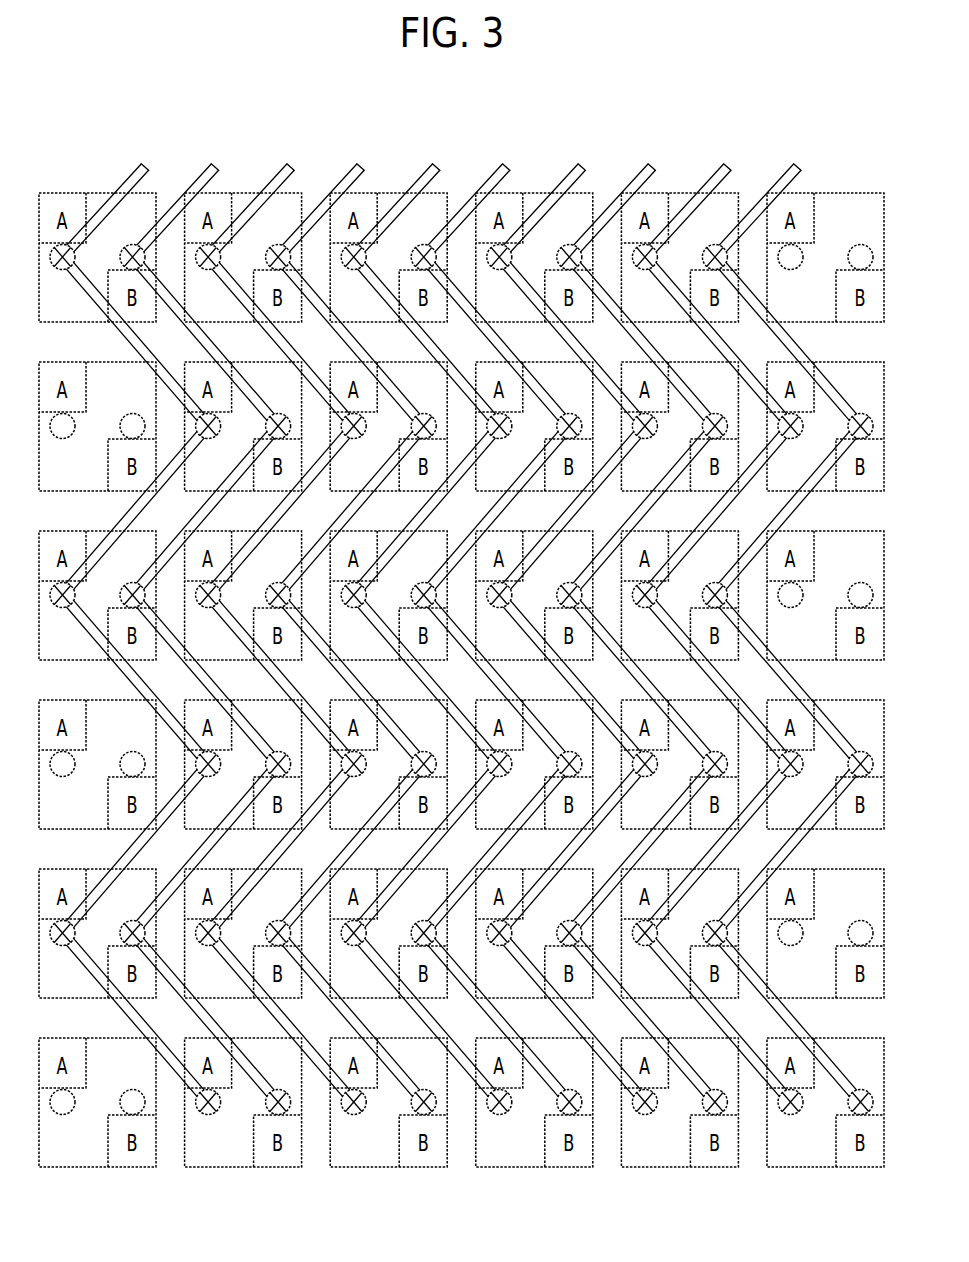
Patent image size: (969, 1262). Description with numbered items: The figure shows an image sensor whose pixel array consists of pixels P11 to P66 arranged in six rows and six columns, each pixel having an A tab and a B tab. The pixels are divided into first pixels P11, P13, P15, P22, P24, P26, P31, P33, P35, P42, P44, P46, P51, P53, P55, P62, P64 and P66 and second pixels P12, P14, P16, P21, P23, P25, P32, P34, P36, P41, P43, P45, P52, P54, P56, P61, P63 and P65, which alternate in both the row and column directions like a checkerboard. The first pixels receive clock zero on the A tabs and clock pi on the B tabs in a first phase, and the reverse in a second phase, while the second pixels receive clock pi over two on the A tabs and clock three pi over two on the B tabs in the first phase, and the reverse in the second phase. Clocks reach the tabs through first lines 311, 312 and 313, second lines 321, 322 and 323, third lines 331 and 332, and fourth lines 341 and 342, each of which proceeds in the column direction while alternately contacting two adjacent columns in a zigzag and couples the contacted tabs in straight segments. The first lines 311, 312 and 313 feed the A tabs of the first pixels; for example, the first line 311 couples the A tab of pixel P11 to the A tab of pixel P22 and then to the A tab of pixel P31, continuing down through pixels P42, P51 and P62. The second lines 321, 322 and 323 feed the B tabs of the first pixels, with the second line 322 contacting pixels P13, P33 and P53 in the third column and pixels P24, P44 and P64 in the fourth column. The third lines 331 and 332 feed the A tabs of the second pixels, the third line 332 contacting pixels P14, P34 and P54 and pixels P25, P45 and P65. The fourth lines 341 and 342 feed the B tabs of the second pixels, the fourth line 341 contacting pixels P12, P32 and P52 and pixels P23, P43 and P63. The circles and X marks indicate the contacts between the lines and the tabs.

The first line 311 is at (145, 161).
The second line 321 is at (215, 161).
The third line 331 is at (291, 161).
The fourth line 341 is at (361, 161).
The first line 312 is at (436, 161).
The second line 322 is at (506, 161).
The third line 332 is at (582, 161).
The fourth line 342 is at (652, 161).
The first line 313 is at (727, 161).
The second line 323 is at (797, 161).
The first pixel P11 is at (102, 193).
The second pixel P12 is at (248, 193).
The first pixel P13 is at (393, 193).
The second pixel P14 is at (539, 193).
The first pixel P15 is at (684, 193).
The second pixel P16 is at (840, 193).
The second pixel P21 is at (102, 362).
The first pixel P22 is at (248, 362).
The second pixel P23 is at (393, 362).
The first pixel P24 is at (539, 362).
The second pixel P25 is at (684, 362).
The first pixel P26 is at (840, 362).
The first pixel P31 is at (102, 531).
The second pixel P32 is at (248, 531).
The first pixel P33 is at (393, 531).
The second pixel P34 is at (539, 531).
The first pixel P35 is at (684, 531).
The second pixel P36 is at (840, 531).
The second pixel P41 is at (102, 700).
The first pixel P42 is at (248, 700).
The second pixel P43 is at (393, 700).
The first pixel P44 is at (539, 700).
The second pixel P45 is at (684, 700).
The first pixel P46 is at (840, 700).
The first pixel P51 is at (102, 869).
The second pixel P52 is at (248, 869).
The first pixel P53 is at (393, 869).
The second pixel P54 is at (539, 869).
The first pixel P55 is at (684, 869).
The second pixel P56 is at (840, 869).
The second pixel P61 is at (102, 1038).
The first pixel P62 is at (248, 1038).
The second pixel P63 is at (393, 1038).
The first pixel P64 is at (539, 1038).
The second pixel P65 is at (684, 1038).
The first pixel P66 is at (840, 1038).